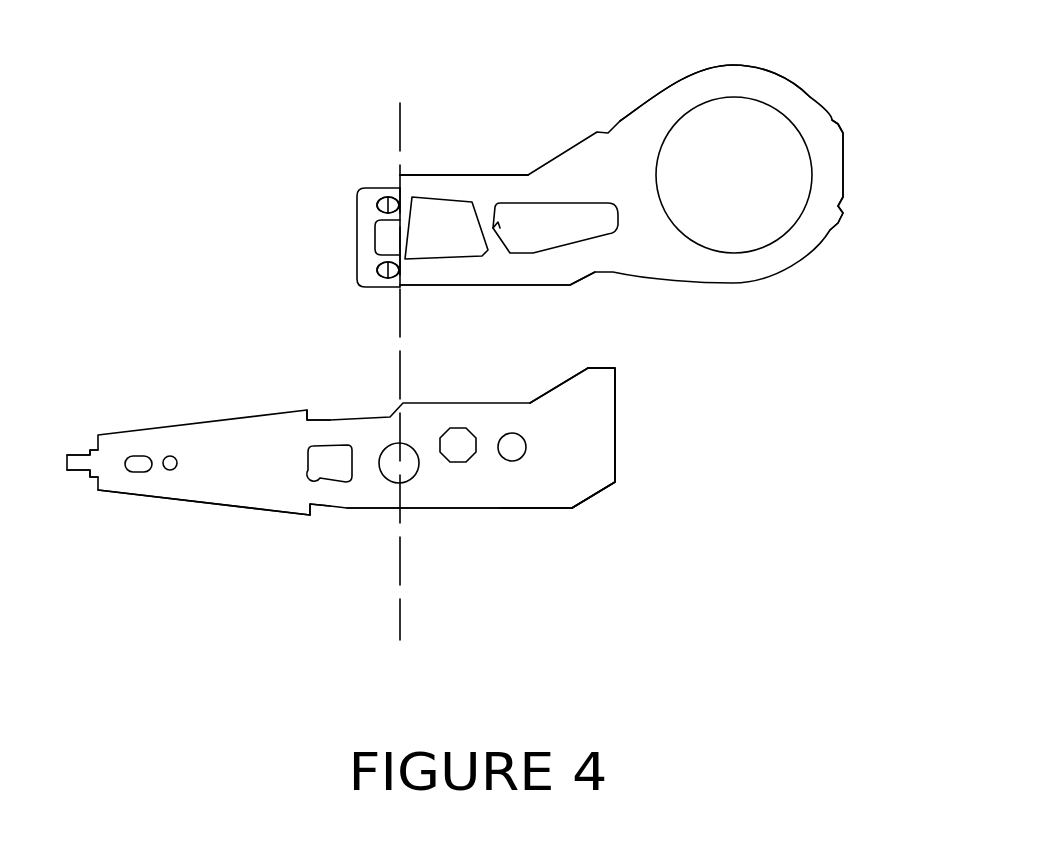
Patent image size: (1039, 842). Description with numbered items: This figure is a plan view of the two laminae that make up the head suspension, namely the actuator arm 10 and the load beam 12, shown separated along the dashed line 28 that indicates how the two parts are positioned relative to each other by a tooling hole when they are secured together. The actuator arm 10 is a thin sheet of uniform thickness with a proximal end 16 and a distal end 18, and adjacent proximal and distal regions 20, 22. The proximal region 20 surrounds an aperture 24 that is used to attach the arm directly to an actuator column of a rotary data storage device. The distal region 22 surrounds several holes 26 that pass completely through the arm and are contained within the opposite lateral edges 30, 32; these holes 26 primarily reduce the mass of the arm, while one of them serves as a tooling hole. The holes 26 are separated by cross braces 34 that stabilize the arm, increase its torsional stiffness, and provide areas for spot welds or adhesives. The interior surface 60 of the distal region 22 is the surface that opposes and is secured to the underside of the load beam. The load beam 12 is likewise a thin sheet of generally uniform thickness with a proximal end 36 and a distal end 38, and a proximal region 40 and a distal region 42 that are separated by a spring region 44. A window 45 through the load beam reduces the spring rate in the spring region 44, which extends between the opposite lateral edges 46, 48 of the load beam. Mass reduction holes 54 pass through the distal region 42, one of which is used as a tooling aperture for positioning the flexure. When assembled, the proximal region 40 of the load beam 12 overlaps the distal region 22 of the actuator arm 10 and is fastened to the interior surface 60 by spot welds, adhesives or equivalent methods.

The actuator arm 10 is at (758, 75).
The load beam 12 is at (240, 443).
The proximal end 16 is at (845, 172).
The distal end 18 is at (357, 237).
The proximal region 20 is at (702, 73).
The distal region 22 is at (514, 173).
The aperture 24 is at (759, 156).
The holes 26 is at (376, 203).
The dashed line 28 is at (400, 617).
The lateral edge 30 is at (460, 175).
The lateral edge 32 is at (556, 285).
The cross braces 34 is at (390, 203).
The proximal end 36 is at (615, 422).
The distal end 38 is at (88, 473).
The proximal region 40 is at (546, 487).
The distal region 42 is at (193, 487).
The spring region 44 is at (330, 506).
The window 45 is at (318, 480).
The lateral edge 46 is at (329, 419).
The lateral edge 48 is at (472, 510).
The mass reduction holes 54 is at (170, 453).
The interior surface 60 is at (430, 188).